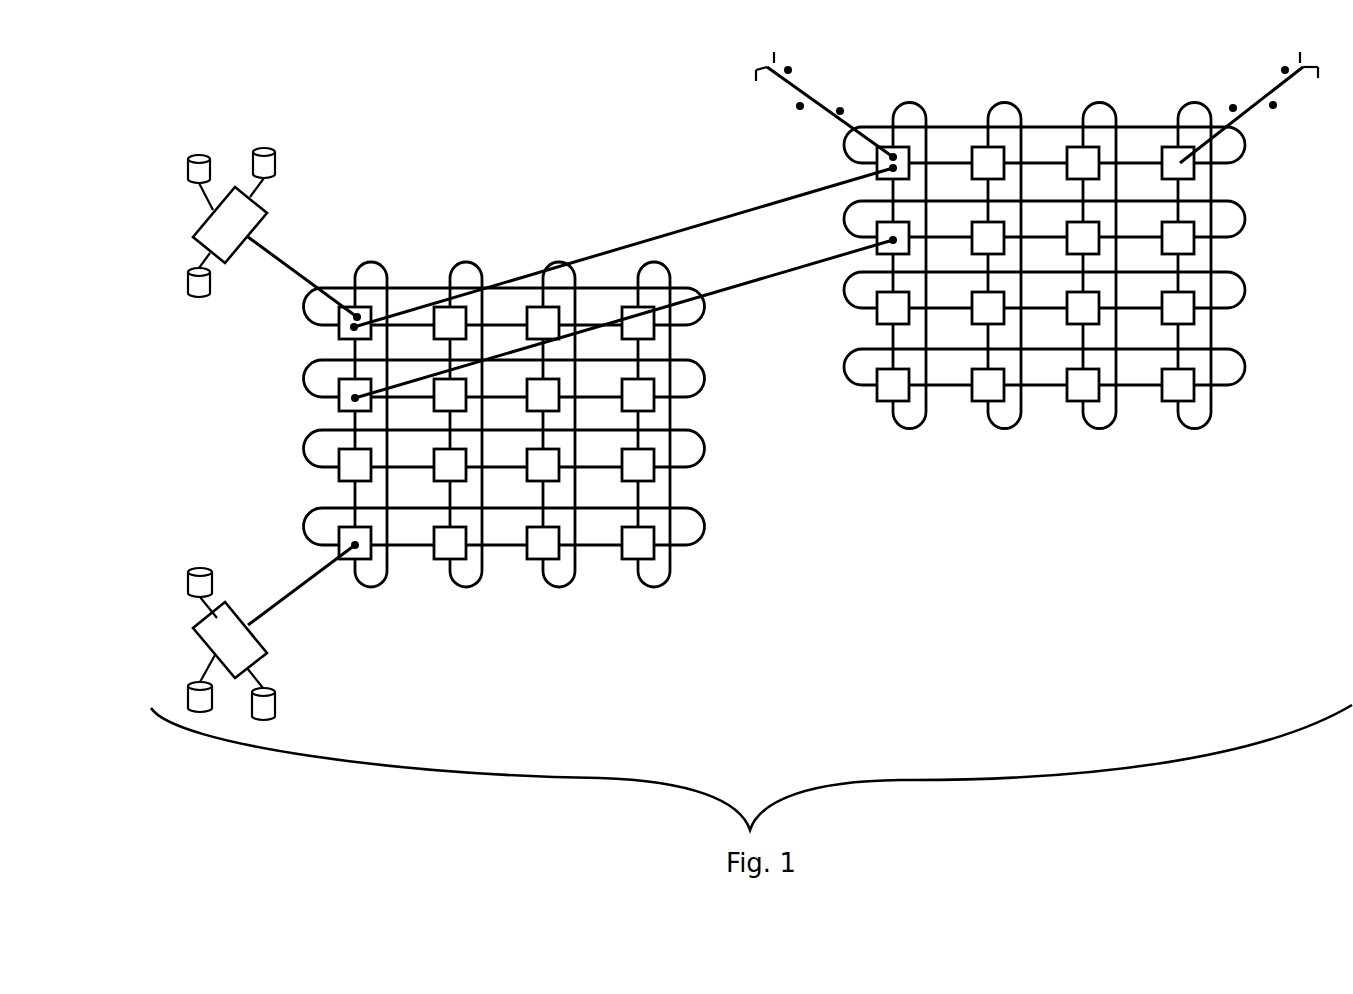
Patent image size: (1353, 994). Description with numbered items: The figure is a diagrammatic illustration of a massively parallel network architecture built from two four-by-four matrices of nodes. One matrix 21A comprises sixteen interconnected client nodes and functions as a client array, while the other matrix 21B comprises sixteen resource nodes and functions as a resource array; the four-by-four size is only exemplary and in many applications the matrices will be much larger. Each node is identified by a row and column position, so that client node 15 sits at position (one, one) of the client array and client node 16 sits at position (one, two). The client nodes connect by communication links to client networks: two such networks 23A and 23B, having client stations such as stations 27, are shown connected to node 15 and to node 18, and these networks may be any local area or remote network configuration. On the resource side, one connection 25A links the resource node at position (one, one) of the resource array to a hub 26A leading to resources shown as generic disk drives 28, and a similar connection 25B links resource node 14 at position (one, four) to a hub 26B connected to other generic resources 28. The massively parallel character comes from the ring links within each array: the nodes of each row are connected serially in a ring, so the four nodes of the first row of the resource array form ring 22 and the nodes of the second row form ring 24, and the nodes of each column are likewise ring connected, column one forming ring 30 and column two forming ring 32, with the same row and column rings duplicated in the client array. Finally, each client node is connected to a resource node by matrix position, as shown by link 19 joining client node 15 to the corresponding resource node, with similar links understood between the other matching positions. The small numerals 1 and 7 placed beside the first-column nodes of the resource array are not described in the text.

The crosspoint switch node 1 is at (372, 319).
The crosspoint switch node 7 is at (374, 388).
The resource node 14 is at (343, 523).
The client node 15 is at (907, 136).
The client node 16 is at (997, 142).
The client node 18 is at (1160, 168).
The link 19 is at (742, 210).
The matrix 21A is at (1059, 330).
The matrix 21B is at (485, 355).
The ring 22 is at (321, 287).
The client network 23A is at (792, 87).
The client network 23B is at (1282, 88).
The ring 24 is at (322, 362).
The connection 25A is at (258, 250).
The connection 25B is at (290, 597).
The hub 26A is at (262, 223).
The hub 26B is at (192, 640).
The client station 27 is at (790, 68).
The disk drive 28 is at (200, 155).
The ring 30 is at (388, 273).
The ring 32 is at (480, 575).